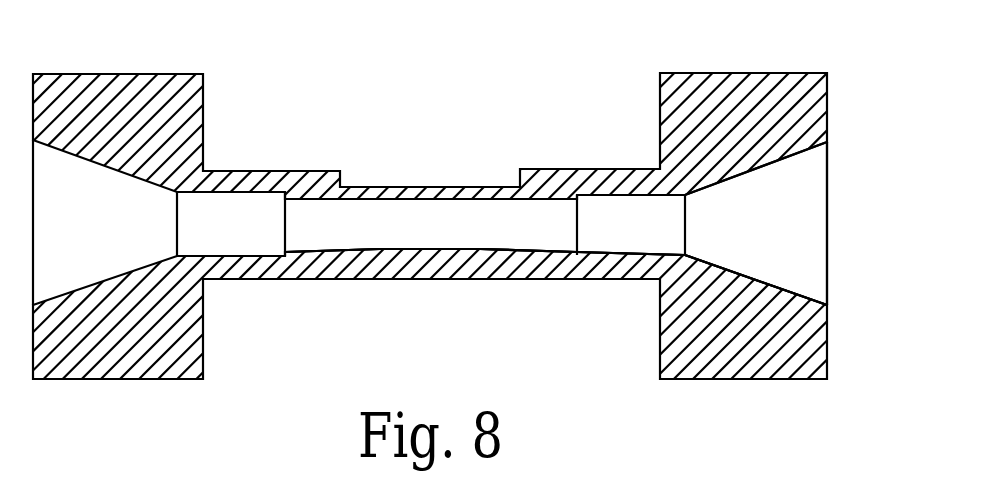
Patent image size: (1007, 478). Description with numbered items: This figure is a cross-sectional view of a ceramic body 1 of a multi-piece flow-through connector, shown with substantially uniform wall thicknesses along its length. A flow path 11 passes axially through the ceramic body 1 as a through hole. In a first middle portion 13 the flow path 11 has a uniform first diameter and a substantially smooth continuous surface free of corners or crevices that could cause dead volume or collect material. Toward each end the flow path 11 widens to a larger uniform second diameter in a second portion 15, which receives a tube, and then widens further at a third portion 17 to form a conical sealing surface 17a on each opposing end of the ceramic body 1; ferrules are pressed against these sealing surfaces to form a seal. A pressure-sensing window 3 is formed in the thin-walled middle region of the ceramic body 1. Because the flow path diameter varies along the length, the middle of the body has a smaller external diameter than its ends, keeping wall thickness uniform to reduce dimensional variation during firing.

The ceramic body 1 is at (183, 72).
The pressure-sensing window 3 is at (418, 190).
The flow path 11 is at (834, 201).
The first middle portion 13 is at (391, 249).
The second portion 15 is at (628, 254).
The third portion 17 is at (802, 235).
The sealing surface 17a is at (772, 287).